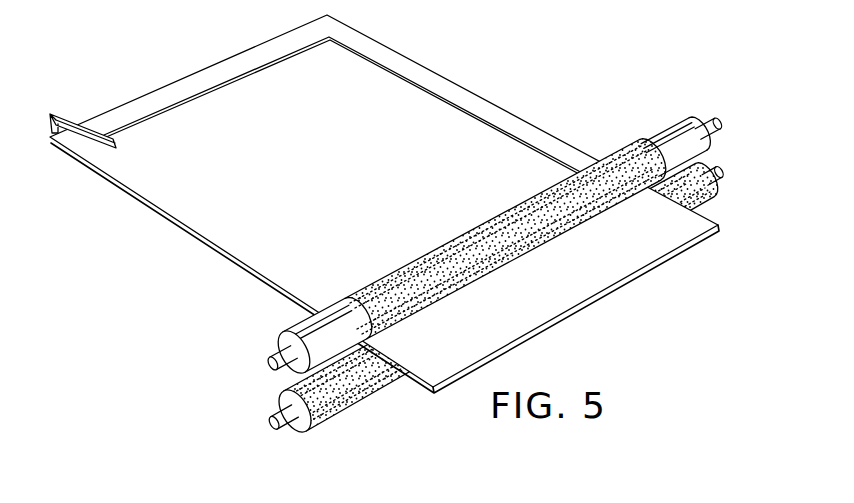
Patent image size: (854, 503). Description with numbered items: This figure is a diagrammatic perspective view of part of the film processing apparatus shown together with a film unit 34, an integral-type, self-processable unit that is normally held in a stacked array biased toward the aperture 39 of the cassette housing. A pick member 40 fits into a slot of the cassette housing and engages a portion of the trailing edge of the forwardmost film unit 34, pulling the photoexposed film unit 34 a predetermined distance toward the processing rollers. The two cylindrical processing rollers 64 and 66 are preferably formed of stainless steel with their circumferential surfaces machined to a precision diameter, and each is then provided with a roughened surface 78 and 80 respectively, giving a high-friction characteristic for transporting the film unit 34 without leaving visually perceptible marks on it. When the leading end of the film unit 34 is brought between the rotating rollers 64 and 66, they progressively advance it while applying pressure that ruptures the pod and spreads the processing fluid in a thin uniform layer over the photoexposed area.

The film unit 34 is at (498, 101).
The aperture 39 is at (517, 138).
The pick member 40 is at (70, 117).
The processing roller 64 is at (673, 126).
The processing roller 66 is at (704, 208).
The roughened surface 78 is at (632, 143).
The roughened surface 80 is at (377, 392).